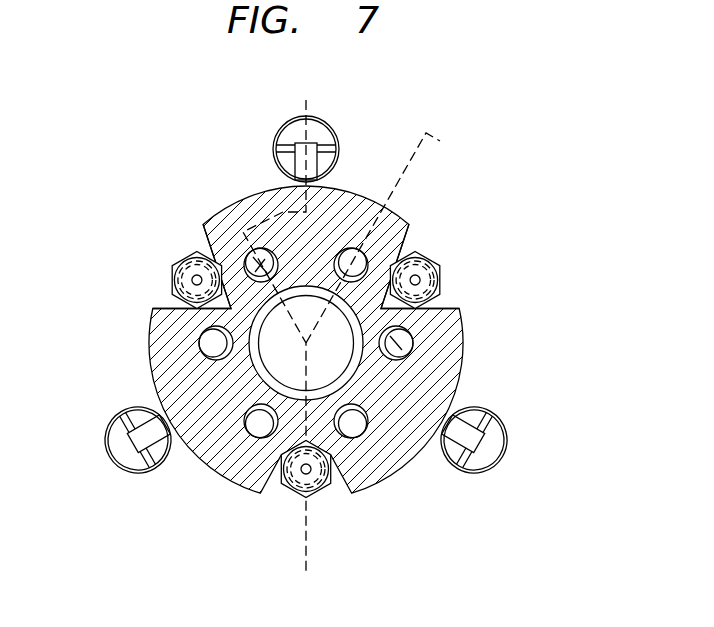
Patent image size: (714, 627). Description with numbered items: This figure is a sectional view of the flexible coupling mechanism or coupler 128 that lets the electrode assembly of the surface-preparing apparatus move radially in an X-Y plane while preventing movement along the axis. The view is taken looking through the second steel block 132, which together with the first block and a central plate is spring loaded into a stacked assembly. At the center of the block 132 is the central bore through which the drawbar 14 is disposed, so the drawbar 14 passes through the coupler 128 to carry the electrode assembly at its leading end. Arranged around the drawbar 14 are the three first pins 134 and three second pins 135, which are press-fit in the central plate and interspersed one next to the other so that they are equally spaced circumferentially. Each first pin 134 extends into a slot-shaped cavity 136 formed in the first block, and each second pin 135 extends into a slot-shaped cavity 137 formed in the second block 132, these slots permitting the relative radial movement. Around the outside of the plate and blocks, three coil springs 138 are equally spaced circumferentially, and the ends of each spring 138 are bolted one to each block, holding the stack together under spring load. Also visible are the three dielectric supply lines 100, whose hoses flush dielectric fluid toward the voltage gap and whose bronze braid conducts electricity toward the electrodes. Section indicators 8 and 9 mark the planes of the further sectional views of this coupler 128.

The section line 8- 8 is at (323, 100).
The section line 9- 9 is at (400, 367).
The drawbar 14 is at (272, 359).
The dielectric supply line 100 is at (172, 245).
The flexible coupling mechanism 128 is at (560, 162).
The second steel block 132 is at (457, 312).
The first pin 134 is at (202, 345).
The second pin 135 is at (254, 238).
The slot-shaped cavity 136 is at (148, 307).
The slot-shaped cavity 137 is at (220, 213).
The coil spring 138 is at (288, 121).